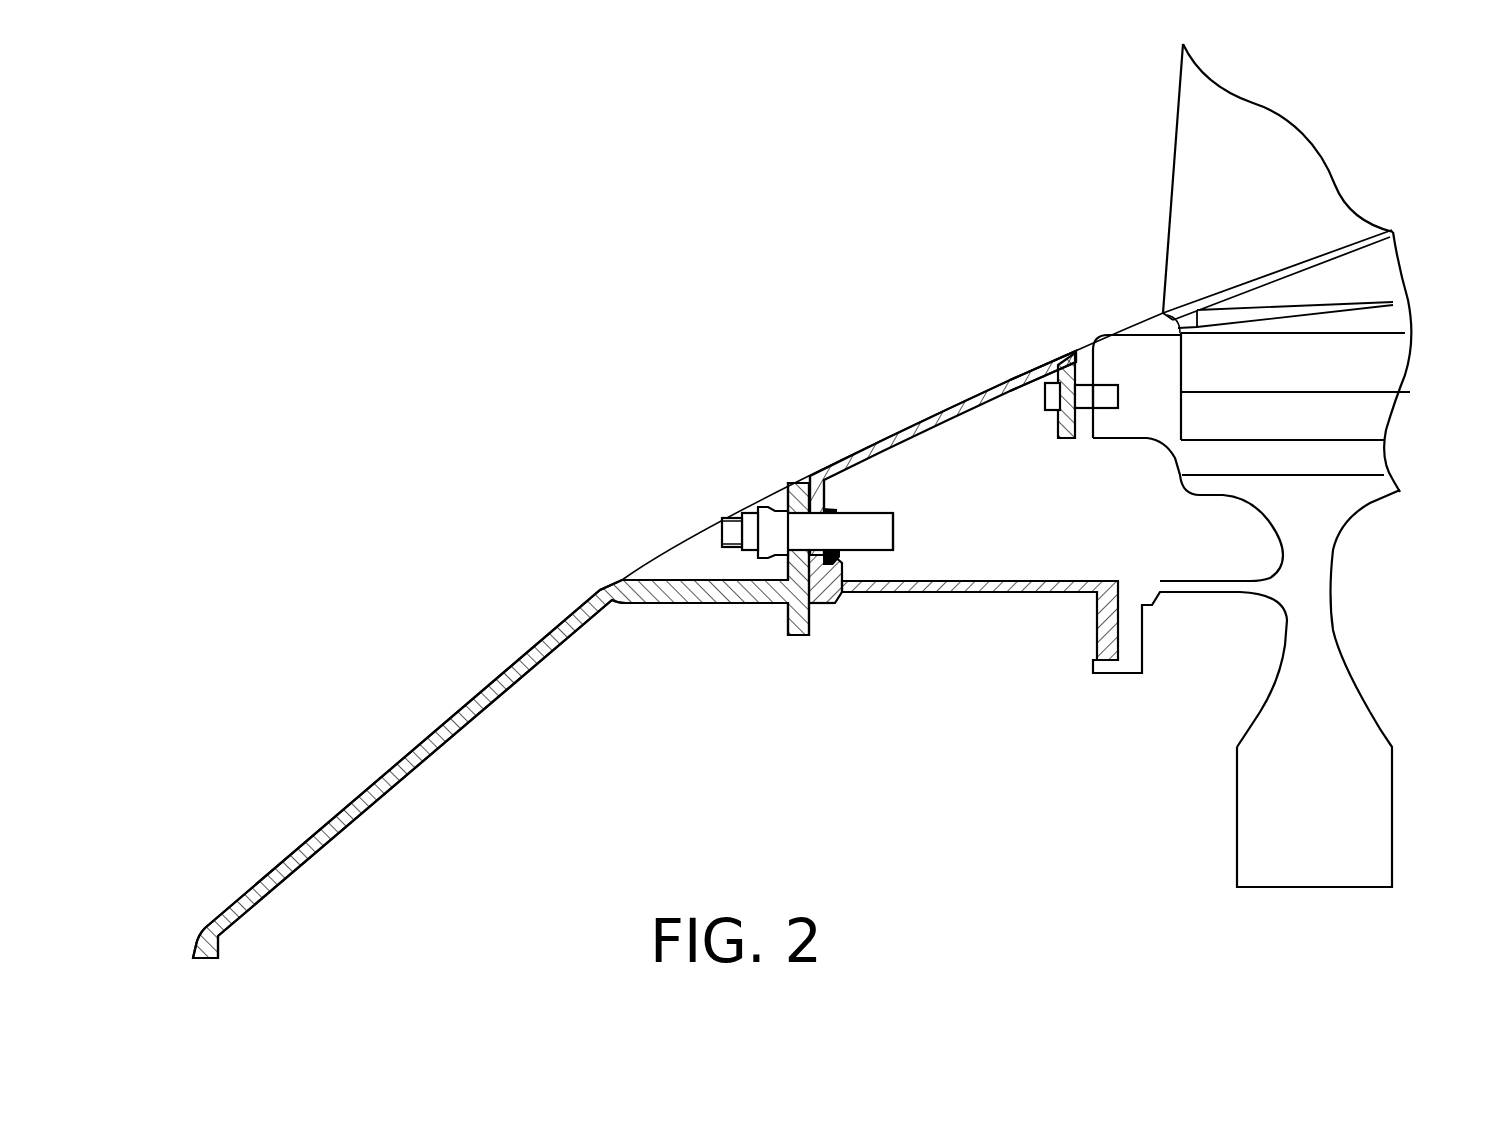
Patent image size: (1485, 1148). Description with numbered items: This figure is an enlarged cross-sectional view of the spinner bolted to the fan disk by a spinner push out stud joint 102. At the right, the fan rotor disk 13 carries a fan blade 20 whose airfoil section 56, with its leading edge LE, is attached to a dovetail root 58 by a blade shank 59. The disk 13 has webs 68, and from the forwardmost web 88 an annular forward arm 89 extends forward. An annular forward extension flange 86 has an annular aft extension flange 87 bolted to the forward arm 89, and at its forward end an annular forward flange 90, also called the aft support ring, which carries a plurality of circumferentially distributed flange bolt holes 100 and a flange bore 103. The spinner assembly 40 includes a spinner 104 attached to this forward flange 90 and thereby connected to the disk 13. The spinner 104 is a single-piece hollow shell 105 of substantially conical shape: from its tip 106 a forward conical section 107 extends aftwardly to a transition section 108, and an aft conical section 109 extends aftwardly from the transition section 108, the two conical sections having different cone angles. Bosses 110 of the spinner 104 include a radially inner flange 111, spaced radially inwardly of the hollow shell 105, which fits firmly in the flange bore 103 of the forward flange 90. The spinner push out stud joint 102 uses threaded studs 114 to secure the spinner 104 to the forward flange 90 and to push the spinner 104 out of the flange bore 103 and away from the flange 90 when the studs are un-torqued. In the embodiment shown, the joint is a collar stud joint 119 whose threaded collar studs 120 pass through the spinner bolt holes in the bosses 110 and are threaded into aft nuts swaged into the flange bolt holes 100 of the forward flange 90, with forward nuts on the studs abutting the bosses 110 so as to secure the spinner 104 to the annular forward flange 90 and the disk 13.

The fan rotor disk 13 is at (1353, 520).
The fan blade 20 is at (1297, 148).
The spinner assembly 40 is at (670, 503).
The airfoil section 56 is at (1247, 132).
The dovetail root 58 is at (1410, 348).
The blade shank 59 is at (1373, 273).
The web 68 is at (1330, 680).
The forward extension flange 86 is at (953, 400).
The aft extension flange 87 is at (1062, 438).
The forwardmost web 88 is at (1273, 687).
The forward arm 89 is at (1107, 338).
The forward flange 90 is at (833, 490).
The flange bolt hole 100 is at (813, 518).
The spinner push out stud joint 102 is at (829, 630).
The flange bore 103 is at (847, 593).
The spinner 104 is at (472, 729).
The hollow shell 105 is at (392, 788).
The tip 106 is at (190, 955).
The forward conical section 107 is at (478, 700).
The transition section 108 is at (632, 575).
The aft conical section 109 is at (752, 492).
The boss 110 is at (668, 605).
The inner flange 111 is at (822, 623).
The threaded stud 114 is at (883, 515).
The collar stud joint 119 is at (935, 527).
The collar stud 120 is at (908, 522).
The leading edge LE is at (1175, 152).